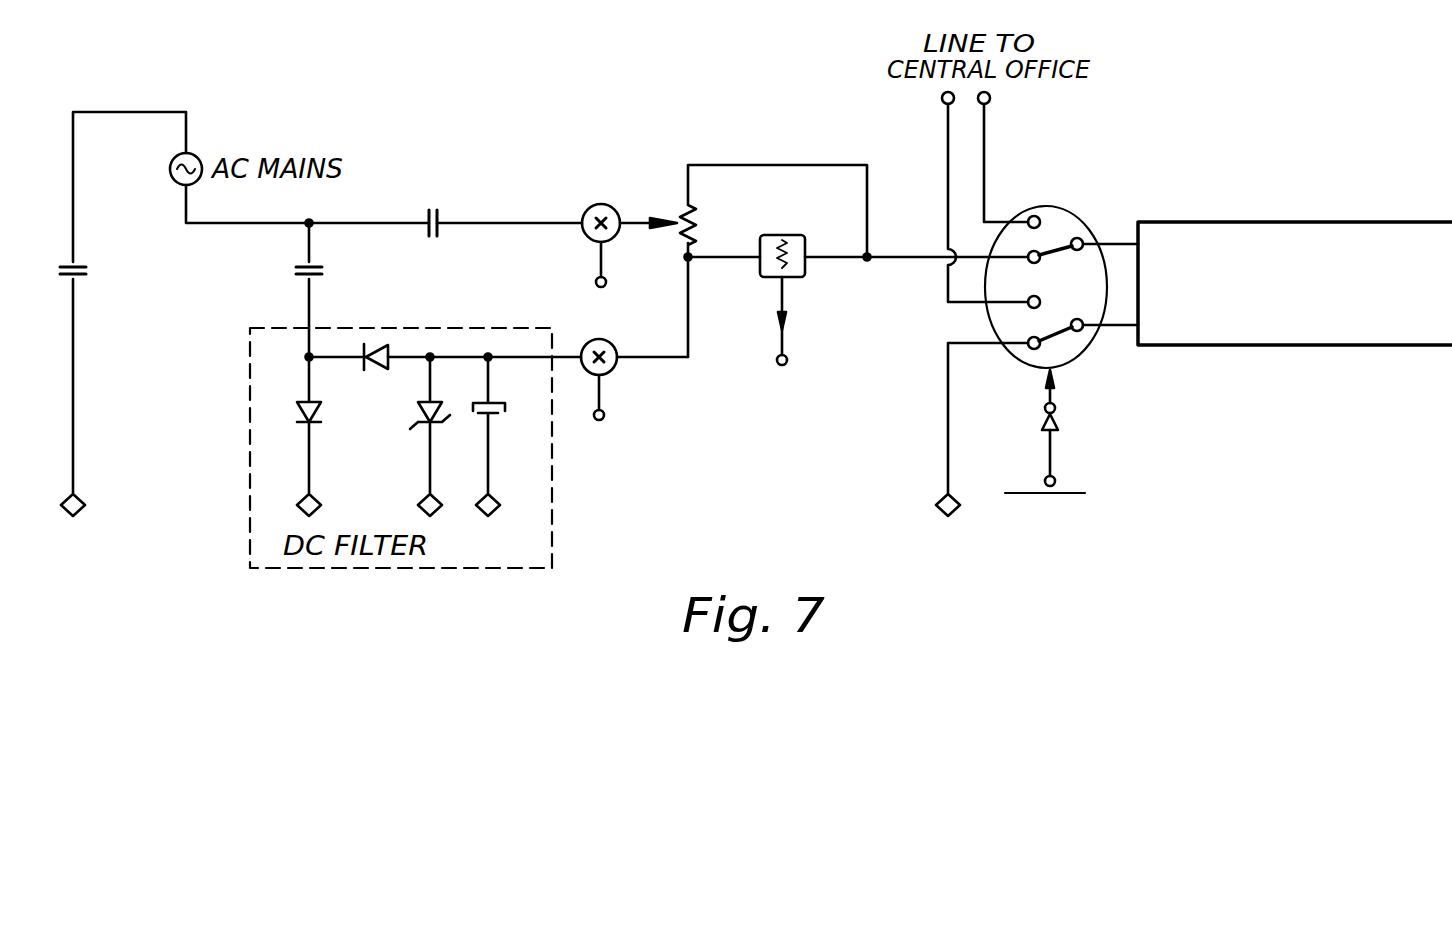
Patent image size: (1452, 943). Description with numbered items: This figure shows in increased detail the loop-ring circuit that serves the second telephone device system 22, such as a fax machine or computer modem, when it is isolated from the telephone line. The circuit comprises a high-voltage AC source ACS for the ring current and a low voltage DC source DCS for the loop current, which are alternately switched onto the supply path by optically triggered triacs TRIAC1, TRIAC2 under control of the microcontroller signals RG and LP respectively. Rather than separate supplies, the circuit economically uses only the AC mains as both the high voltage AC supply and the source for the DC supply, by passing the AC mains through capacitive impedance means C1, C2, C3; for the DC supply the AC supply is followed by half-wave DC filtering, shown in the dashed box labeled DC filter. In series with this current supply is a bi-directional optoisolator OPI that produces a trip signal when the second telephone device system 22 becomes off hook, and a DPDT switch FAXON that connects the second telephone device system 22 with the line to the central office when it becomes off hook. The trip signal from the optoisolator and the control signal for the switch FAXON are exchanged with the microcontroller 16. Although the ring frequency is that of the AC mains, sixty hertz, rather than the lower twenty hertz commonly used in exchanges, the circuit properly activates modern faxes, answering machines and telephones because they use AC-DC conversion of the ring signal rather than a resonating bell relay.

The capacitive impedance means C1 is at (326, 269).
The capacitive impedance means C2 is at (431, 208).
The capacitive impedance means C3 is at (91, 269).
The high-voltage AC source ACS is at (516, 222).
The low voltage DC source DCS is at (570, 355).
The optically triggered triac TRIAC1 is at (600, 204).
The optically triggered triac TRIAC2 is at (614, 366).
The ring control signal RG is at (621, 269).
The loop control signal LP is at (598, 417).
The bi-directional optoisolator OPI is at (805, 265).
The controller signals FOFFH and FAXON-bar 16 is at (940, 400).
The DPDT switch FAXON is at (1012, 357).
The telephone device system 22 is at (1295, 283).